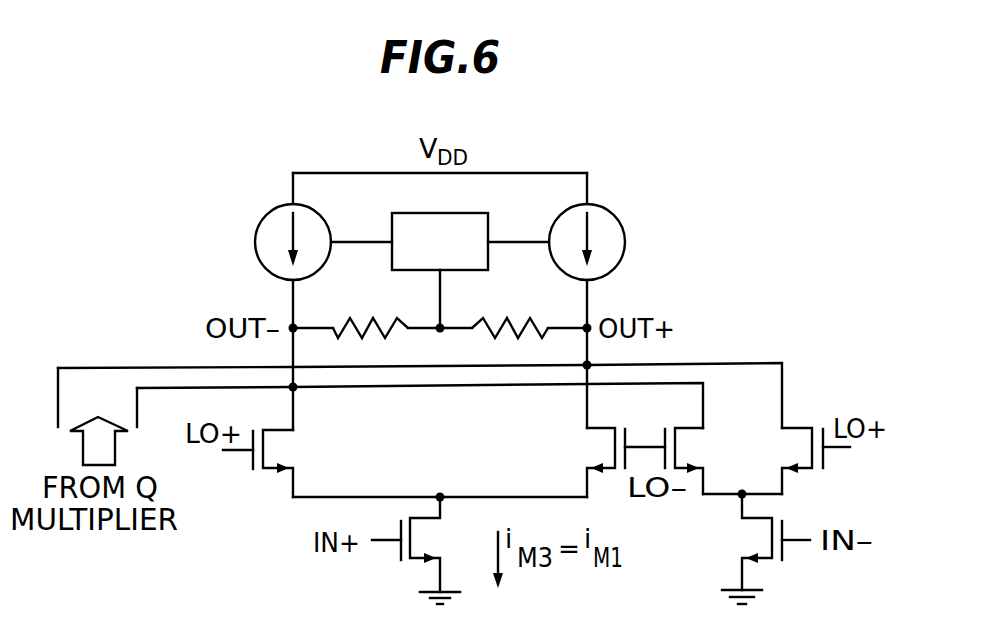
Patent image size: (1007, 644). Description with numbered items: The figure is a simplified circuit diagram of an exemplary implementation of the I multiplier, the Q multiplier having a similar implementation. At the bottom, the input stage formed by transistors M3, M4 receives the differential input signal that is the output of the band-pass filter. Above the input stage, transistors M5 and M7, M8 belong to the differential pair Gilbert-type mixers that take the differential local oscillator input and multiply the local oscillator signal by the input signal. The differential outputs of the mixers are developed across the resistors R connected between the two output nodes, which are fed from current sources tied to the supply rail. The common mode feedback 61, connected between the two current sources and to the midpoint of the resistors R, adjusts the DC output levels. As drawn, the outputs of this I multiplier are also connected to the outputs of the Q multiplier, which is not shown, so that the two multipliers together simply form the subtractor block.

The common mode feedback 61 is at (415, 272).
The resistor R is at (440, 308).
The input stage transistor M3 is at (424, 550).
The input stage transistor M4 is at (683, 516).
The mixer transistor M5 is at (273, 463).
The mixer transistor M7 is at (702, 461).
The mixer transistor M8 is at (800, 461).